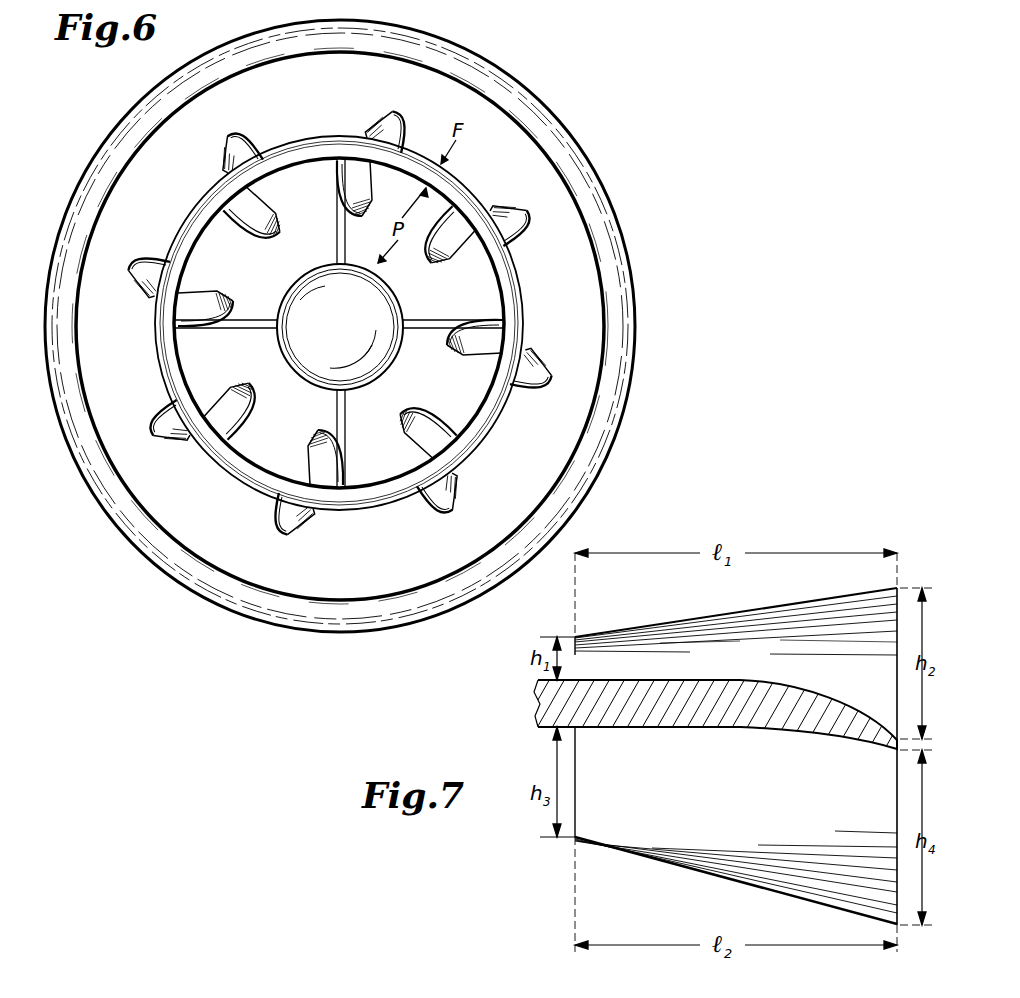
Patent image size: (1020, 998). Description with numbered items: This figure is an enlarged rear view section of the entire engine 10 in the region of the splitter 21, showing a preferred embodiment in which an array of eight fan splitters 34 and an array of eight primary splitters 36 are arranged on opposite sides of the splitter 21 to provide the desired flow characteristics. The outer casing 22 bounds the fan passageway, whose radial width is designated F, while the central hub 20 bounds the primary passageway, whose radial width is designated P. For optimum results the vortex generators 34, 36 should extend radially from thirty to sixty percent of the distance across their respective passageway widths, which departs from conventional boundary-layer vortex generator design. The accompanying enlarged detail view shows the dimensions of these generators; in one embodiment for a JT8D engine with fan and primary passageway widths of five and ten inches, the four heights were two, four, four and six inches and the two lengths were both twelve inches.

In FIG. 6, the fan wheel 10 is at (555, 112).
In FIG. 6, the hub 20 is at (440, 295).
In FIG. 6, the splitter 21 is at (528, 302).
In FIG. 7, the splitter 21 is at (716, 716).
In FIG. 6, the outer rim shroud 22 is at (526, 189).
In FIG. 6, the outer blades 34 is at (251, 140).
In FIG. 7, the outer blades 34 is at (742, 675).
In FIG. 6, the inner blades 36 is at (263, 244).
In FIG. 7, the inner blades 36 is at (742, 798).